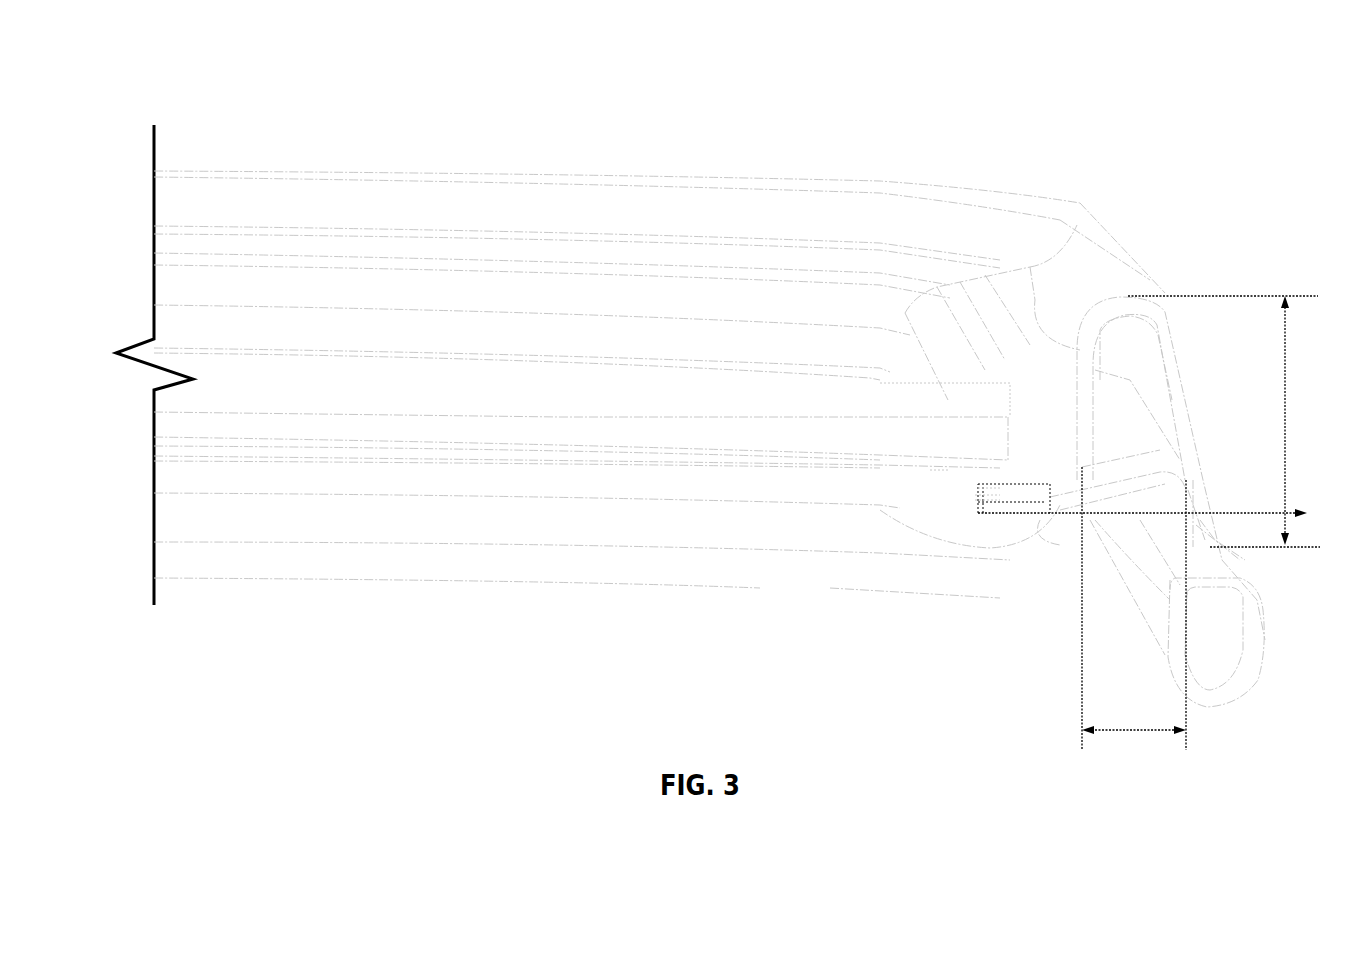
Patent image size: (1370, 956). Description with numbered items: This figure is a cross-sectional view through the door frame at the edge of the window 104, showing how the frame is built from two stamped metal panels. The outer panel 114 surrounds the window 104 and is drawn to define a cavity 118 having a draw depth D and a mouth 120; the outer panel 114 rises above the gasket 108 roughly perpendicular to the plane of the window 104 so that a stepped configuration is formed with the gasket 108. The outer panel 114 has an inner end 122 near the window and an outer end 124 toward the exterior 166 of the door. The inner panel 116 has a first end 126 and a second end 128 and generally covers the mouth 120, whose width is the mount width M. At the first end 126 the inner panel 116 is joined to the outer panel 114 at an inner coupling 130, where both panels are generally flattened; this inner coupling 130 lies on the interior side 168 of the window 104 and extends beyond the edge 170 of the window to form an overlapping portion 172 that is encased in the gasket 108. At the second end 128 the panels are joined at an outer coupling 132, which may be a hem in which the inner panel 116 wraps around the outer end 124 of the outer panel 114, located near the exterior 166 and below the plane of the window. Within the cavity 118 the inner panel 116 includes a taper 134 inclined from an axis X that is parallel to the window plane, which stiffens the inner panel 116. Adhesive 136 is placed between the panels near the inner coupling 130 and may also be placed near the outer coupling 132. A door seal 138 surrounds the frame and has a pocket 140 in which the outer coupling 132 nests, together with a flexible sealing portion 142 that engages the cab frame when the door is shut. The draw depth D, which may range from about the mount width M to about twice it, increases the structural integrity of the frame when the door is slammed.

The window 104 is at (938, 428).
The edge of the window 170 is at (1023, 428).
The gasket 108 is at (1008, 303).
The outer panel 114 is at (1102, 317).
The cavity 118 is at (1110, 347).
The mouth 120 is at (1075, 497).
The exterior of the door 166 is at (1190, 359).
The adhesive 136 is at (1010, 470).
The second end of the inner panel 128 is at (1213, 505).
The outer end of the outer panel 124 is at (1198, 520).
The pocket 140 is at (1223, 534).
The door seal 138 is at (1261, 613).
The outer coupling 132 is at (1199, 540).
The flexible sealing portion 142 is at (1199, 655).
The taper 134 is at (1120, 487).
The inner panel 116 is at (1037, 507).
The first end of the inner panel 126 is at (992, 510).
The inner coupling 130 is at (983, 497).
The inner end of the outer panel 122 is at (983, 489).
The overlapping portion 172 is at (987, 494).
The interior side of the window 168 is at (938, 453).
The draw depth D is at (1285, 333).
The axis X is at (1287, 510).
The mount width M is at (1140, 730).